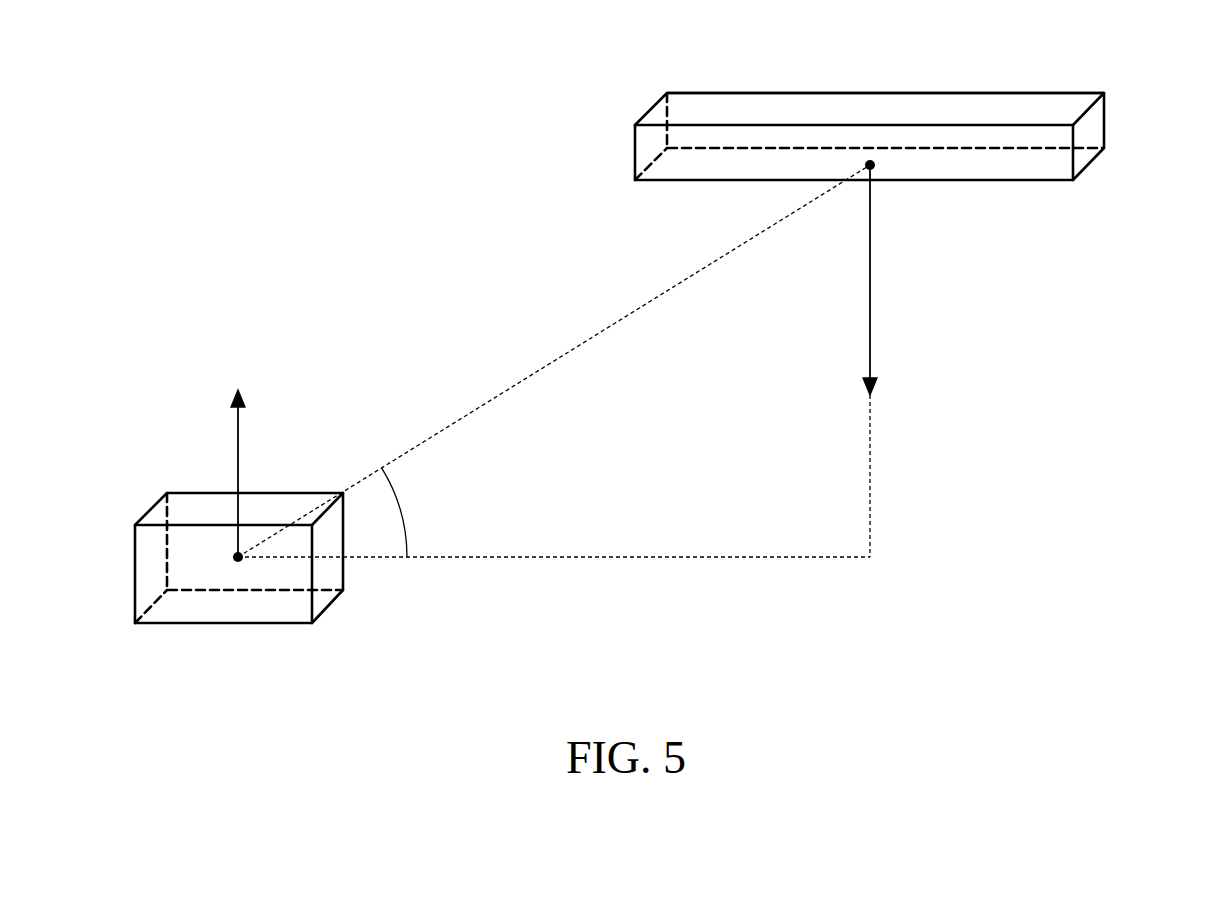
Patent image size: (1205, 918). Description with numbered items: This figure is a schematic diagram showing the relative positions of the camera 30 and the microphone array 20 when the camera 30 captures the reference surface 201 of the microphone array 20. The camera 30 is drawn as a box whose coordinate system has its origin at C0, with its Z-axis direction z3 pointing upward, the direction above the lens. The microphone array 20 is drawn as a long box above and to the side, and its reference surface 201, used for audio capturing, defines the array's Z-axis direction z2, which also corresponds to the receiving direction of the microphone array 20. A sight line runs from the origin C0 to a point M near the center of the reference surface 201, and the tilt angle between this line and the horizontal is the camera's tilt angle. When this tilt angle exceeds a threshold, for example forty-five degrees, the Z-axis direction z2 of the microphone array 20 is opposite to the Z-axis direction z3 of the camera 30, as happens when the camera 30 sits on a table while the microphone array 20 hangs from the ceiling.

The microphone array 20 is at (1104, 121).
The reference surface 201 is at (1011, 108).
The camera 30 is at (190, 490).
The point near the center of the reference surface M is at (870, 160).
The origin of the camera's coordinate system C0 is at (238, 566).
The Z-axis direction of the microphone array z2 is at (885, 361).
The Z-axis direction of the camera z3 is at (238, 453).